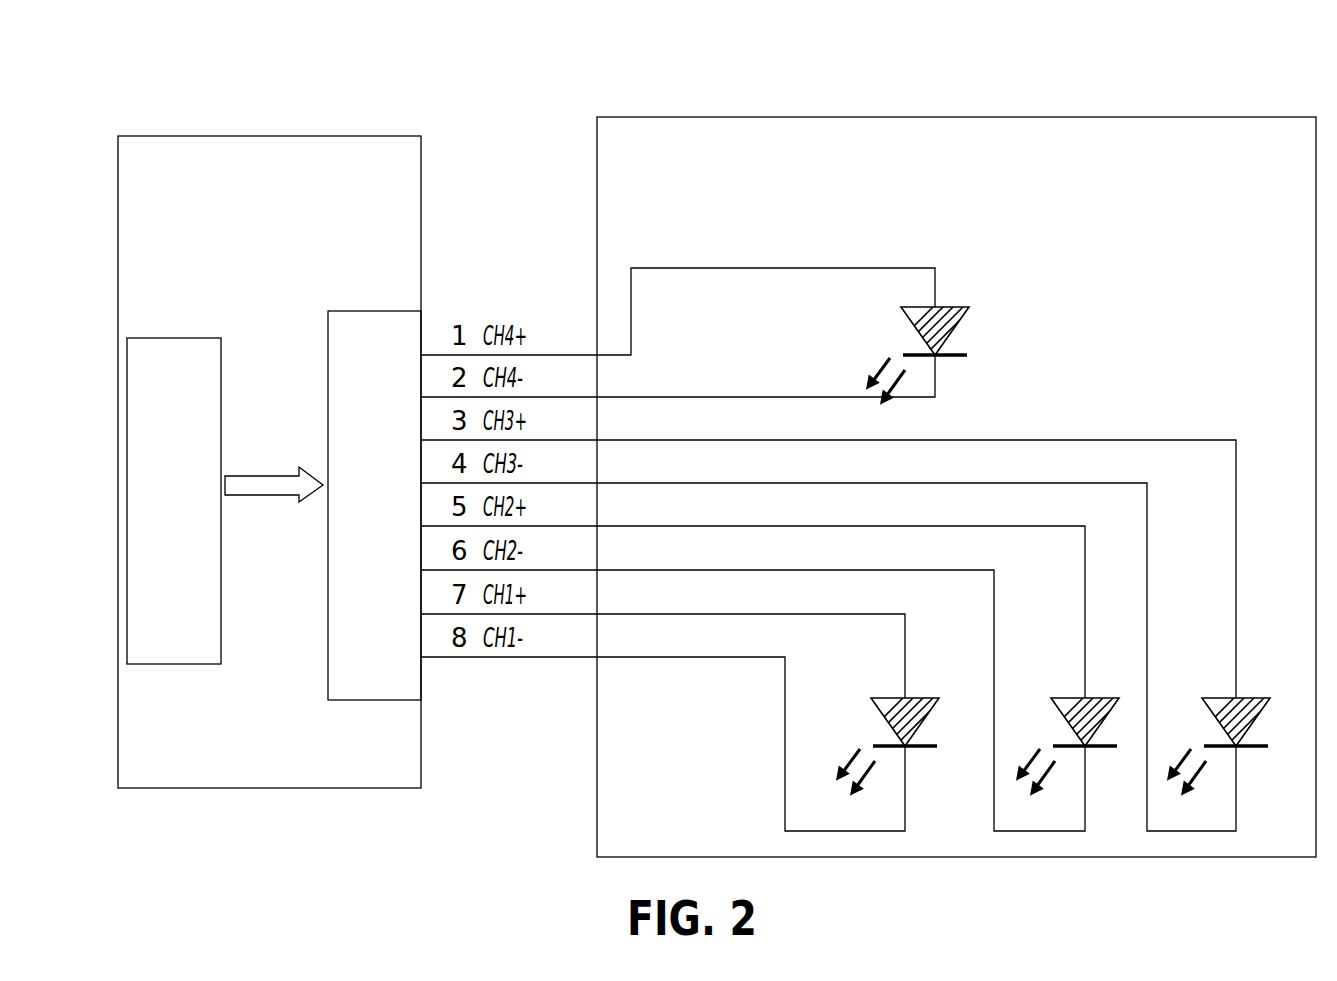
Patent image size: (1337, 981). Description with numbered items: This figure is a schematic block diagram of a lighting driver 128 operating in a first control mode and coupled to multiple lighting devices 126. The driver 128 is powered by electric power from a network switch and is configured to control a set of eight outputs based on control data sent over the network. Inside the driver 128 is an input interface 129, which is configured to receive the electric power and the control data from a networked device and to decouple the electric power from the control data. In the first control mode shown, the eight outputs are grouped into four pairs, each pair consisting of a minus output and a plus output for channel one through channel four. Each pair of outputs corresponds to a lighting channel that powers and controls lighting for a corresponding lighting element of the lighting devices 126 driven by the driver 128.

The lighting devices 126 is at (784, 92).
The lighting driver 128 is at (270, 112).
The input interface 129 is at (190, 518).